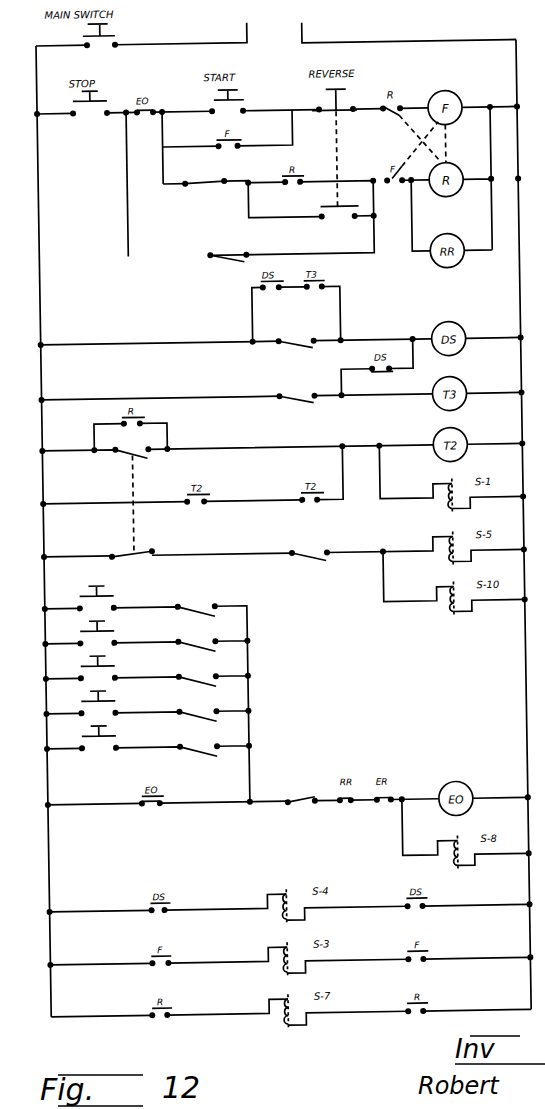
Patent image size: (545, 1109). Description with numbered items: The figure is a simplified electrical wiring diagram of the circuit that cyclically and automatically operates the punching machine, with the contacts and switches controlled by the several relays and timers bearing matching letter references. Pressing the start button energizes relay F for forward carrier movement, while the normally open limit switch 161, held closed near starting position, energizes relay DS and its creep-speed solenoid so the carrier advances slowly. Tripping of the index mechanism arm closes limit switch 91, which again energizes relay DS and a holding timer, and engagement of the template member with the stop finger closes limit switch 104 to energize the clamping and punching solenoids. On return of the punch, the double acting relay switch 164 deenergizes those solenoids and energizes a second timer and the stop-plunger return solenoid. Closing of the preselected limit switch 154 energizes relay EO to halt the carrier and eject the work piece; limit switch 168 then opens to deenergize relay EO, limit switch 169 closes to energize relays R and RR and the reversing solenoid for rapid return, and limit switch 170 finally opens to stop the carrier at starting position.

The limit switch 170 is at (200, 185).
The limit switch 169 is at (219, 259).
The limit switch 161 is at (297, 344).
The limit switch 91 is at (296, 399).
The double acting relay switch 164 is at (139, 566).
The limit switch 104 is at (296, 555).
The limit switch 154 is at (264, 662).
The limit switch 168 is at (297, 806).